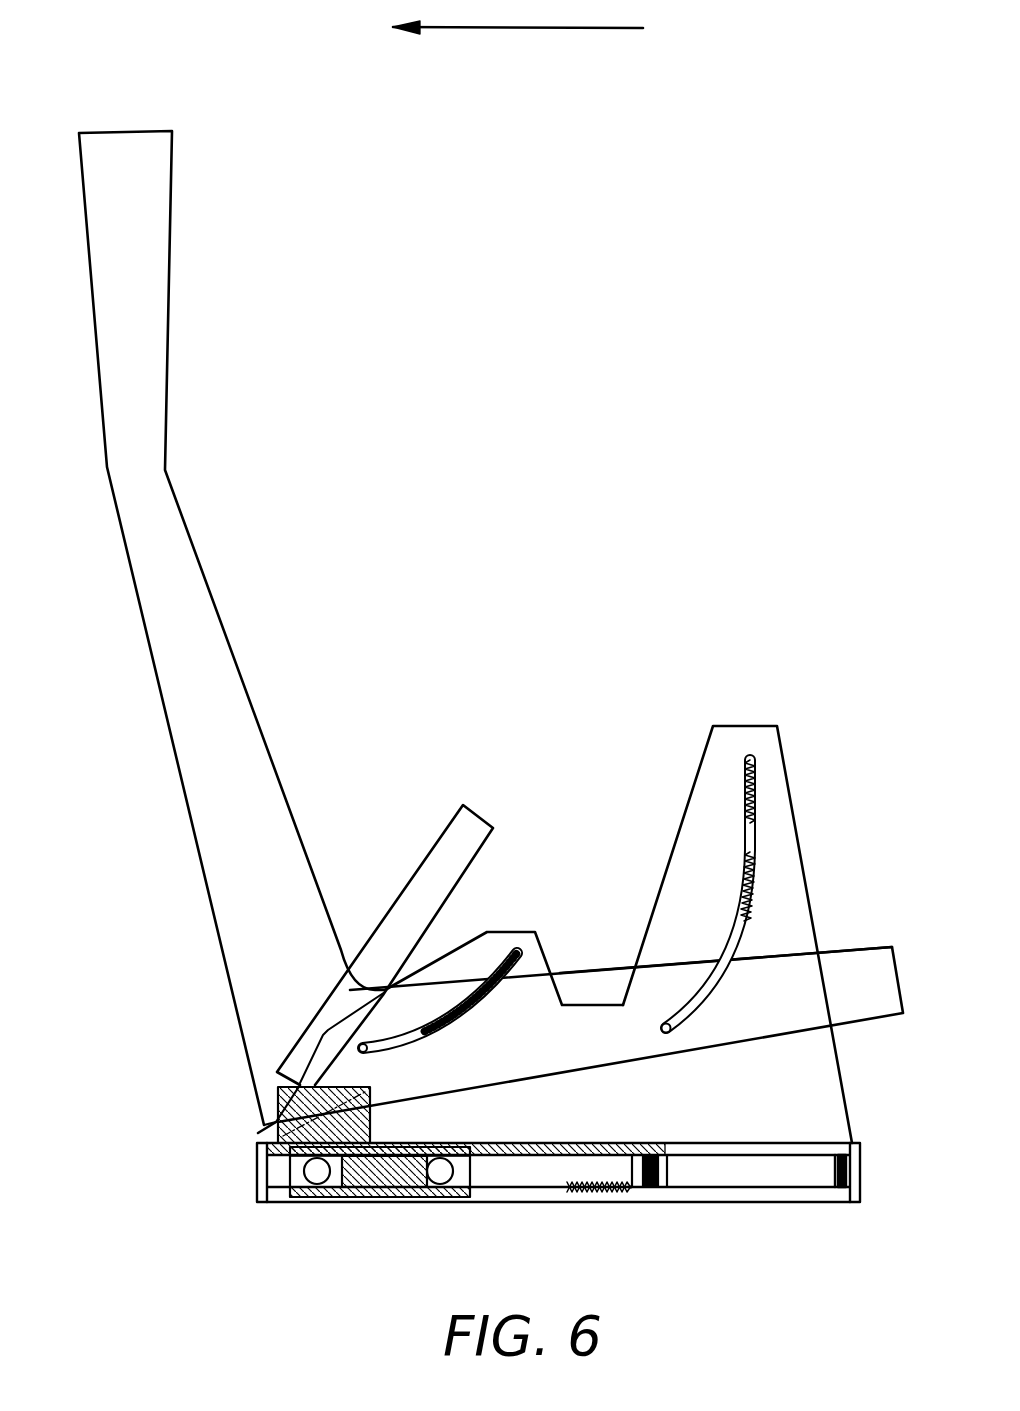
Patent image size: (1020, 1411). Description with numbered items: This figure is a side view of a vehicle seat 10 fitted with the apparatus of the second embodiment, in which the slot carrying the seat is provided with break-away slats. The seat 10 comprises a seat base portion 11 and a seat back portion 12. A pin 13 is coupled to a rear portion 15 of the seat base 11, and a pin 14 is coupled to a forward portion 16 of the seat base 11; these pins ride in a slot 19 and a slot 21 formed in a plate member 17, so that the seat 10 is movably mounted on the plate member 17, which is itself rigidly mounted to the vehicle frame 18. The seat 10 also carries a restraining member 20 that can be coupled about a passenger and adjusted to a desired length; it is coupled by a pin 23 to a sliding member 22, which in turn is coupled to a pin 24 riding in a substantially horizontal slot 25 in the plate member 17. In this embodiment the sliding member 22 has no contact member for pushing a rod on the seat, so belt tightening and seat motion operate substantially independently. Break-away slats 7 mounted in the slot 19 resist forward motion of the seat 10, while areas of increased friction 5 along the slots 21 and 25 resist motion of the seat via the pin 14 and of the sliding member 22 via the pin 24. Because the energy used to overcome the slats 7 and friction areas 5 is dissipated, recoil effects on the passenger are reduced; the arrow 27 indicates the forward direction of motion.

The vehicle seat 10 is at (643, 533).
The seat back portion 12 is at (167, 530).
The restraining member 20 is at (433, 862).
The rear portion 15 is at (440, 987).
The plate member 17 is at (687, 927).
The seat base portion 11 is at (902, 955).
The forward portion 16 is at (785, 955).
The slot 21 is at (743, 847).
The pin 14 is at (677, 1033).
The areas of increased friction 5 is at (737, 793).
The pin 13 is at (440, 1003).
The break-away slats 7 is at (472, 1020).
The slot 19 is at (420, 1040).
The sliding member 22 is at (370, 1122).
The pin 23 is at (290, 1093).
The vehicle frame 18 is at (788, 1212).
The slot 25 is at (515, 1170).
The pin 24 is at (310, 1183).
The direction arrow 27 is at (643, 28).